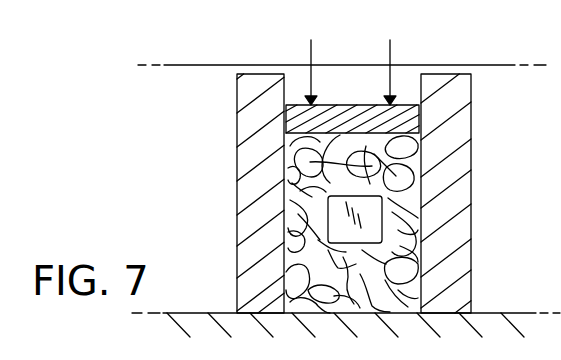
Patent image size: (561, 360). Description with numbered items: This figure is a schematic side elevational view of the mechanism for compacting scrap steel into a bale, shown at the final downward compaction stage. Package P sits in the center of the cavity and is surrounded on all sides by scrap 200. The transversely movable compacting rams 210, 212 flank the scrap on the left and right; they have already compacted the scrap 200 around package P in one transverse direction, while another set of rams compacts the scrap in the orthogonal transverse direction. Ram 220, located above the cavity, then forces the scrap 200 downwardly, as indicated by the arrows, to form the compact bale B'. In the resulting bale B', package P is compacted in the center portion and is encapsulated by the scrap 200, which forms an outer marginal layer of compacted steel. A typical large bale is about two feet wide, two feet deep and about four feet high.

The scrap 200 is at (410, 216).
The compacting ram 210 is at (242, 190).
The compacting ram 212 is at (462, 194).
The ram 220 is at (346, 108).
The package P is at (392, 244).
The bale B' is at (231, 241).